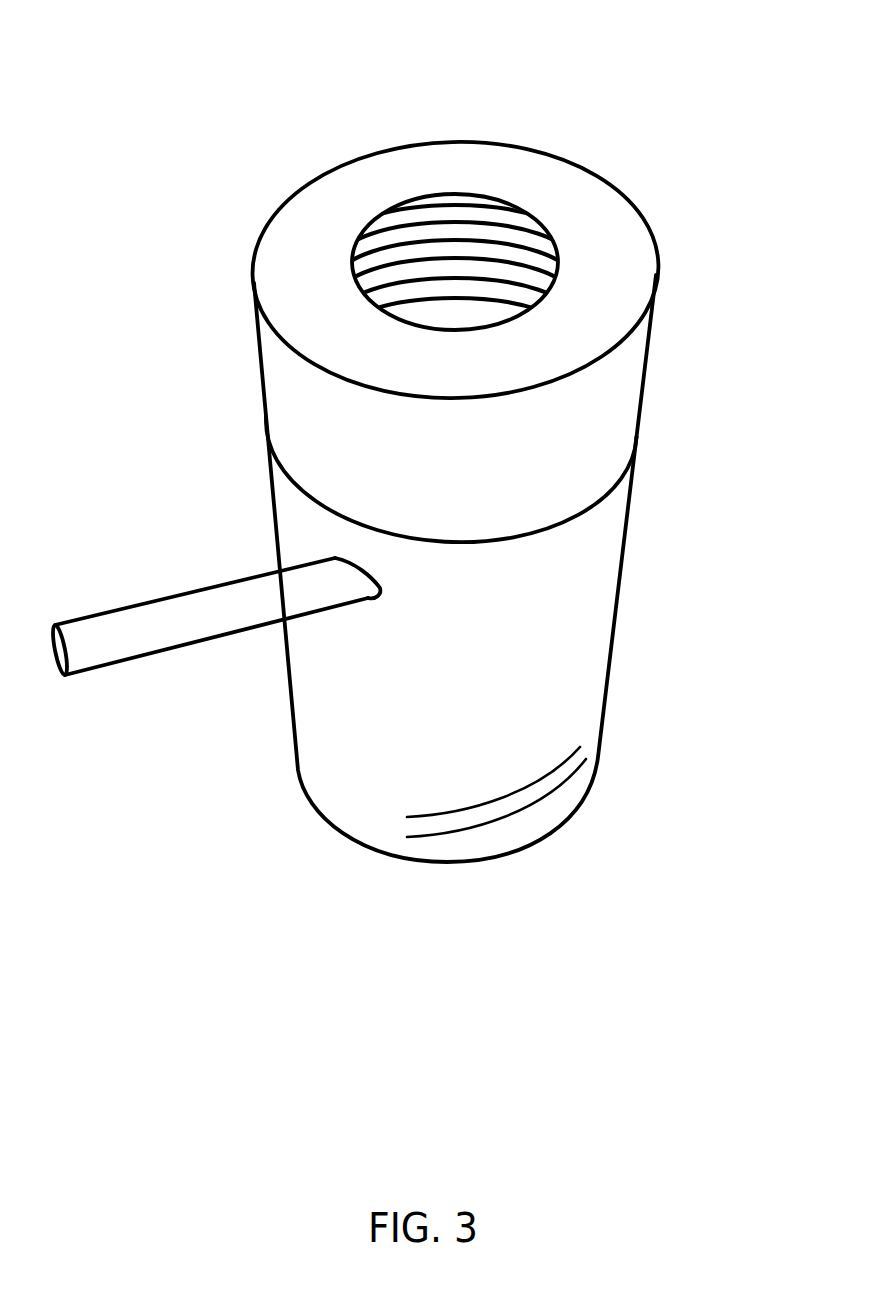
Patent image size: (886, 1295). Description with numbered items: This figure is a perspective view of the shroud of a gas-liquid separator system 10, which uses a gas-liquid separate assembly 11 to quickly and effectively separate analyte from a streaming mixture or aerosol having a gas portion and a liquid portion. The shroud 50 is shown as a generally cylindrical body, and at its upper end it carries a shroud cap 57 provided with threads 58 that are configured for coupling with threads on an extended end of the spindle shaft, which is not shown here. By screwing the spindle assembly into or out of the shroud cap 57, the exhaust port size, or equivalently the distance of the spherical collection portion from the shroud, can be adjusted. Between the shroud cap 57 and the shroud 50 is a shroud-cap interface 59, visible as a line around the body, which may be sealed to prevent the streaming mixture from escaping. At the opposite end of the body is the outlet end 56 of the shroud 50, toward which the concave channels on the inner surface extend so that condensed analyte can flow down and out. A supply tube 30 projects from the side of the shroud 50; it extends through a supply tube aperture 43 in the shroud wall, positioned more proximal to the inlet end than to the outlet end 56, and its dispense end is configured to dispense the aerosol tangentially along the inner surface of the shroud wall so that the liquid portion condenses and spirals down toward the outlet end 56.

The gas-liquid separator system 10 is at (172, 83).
The gas-liquid separate assembly 11 is at (373, 190).
The threads 58 is at (487, 207).
The shroud cap 57 is at (612, 390).
The shroud-cap interface 59 is at (590, 500).
The shroud 50 is at (590, 598).
The outlet end 56 is at (577, 806).
The supply tube 30 is at (117, 640).
The supply tube aperture 43 is at (369, 595).